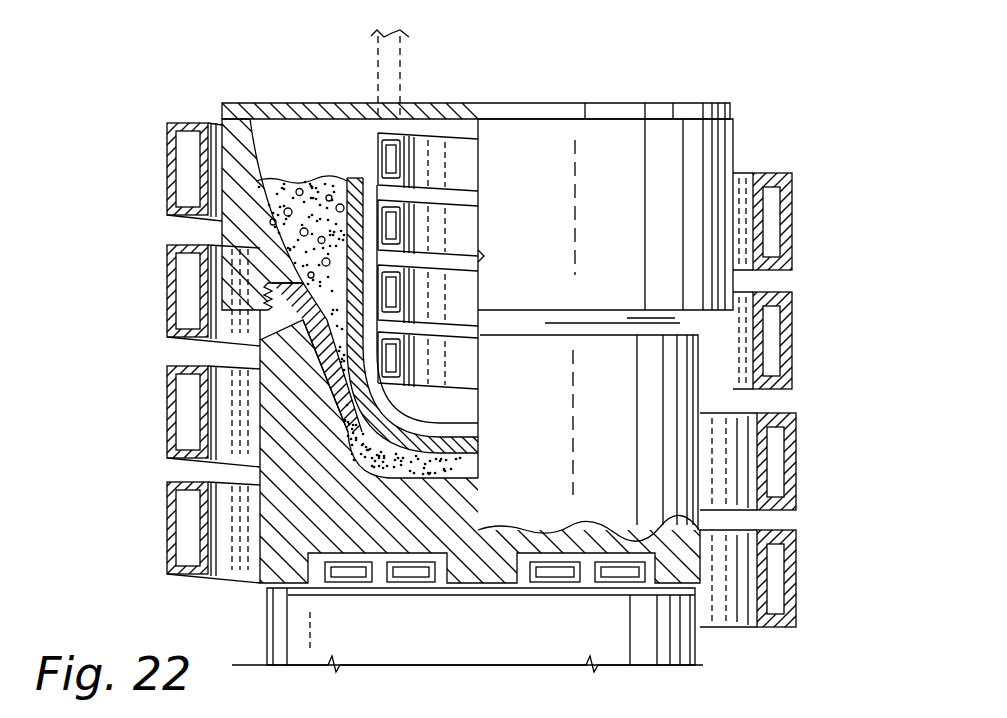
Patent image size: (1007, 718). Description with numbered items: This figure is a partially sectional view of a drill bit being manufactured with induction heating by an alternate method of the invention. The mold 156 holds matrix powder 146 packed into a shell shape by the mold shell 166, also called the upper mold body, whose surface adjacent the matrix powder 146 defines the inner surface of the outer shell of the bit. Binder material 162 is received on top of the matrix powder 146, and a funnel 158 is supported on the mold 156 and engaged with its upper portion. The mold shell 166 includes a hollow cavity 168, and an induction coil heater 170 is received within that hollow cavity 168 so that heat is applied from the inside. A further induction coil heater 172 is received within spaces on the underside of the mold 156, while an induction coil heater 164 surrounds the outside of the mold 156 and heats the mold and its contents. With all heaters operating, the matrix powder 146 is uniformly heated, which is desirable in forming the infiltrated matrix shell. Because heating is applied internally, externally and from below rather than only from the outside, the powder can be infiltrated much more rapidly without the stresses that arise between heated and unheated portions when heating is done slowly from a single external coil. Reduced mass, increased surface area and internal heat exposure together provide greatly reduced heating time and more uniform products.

The matrix powder 146 is at (260, 370).
The mold 156 is at (630, 417).
The funnel 158 is at (665, 150).
The binder material 162 is at (303, 218).
The induction coil heater 164 is at (793, 198).
The mold shell 166 is at (358, 175).
The hollow cavity 168 is at (427, 405).
The induction coil heater 170 is at (430, 135).
The induction coil heater 172 is at (655, 557).